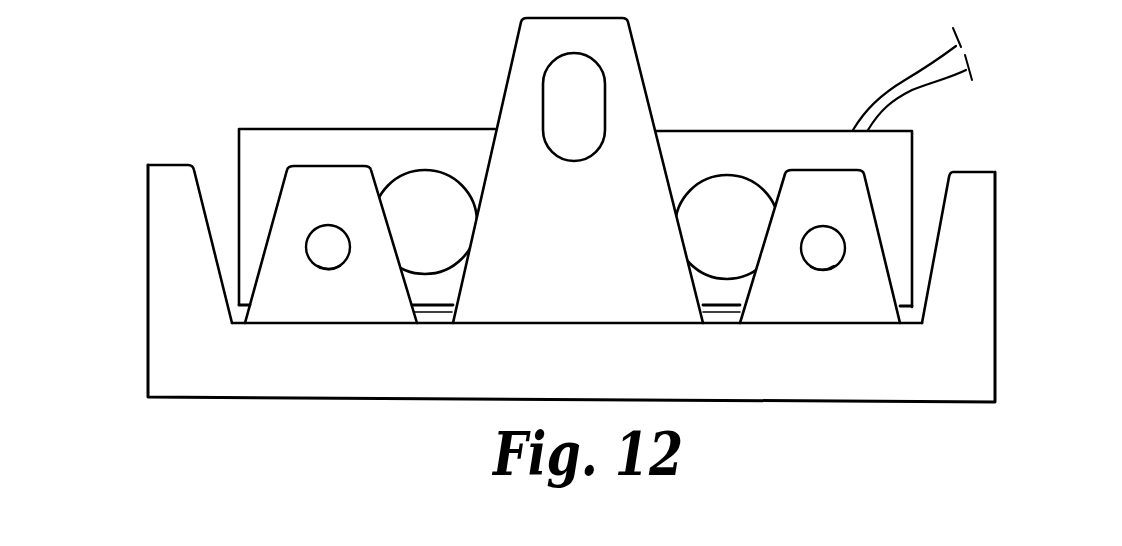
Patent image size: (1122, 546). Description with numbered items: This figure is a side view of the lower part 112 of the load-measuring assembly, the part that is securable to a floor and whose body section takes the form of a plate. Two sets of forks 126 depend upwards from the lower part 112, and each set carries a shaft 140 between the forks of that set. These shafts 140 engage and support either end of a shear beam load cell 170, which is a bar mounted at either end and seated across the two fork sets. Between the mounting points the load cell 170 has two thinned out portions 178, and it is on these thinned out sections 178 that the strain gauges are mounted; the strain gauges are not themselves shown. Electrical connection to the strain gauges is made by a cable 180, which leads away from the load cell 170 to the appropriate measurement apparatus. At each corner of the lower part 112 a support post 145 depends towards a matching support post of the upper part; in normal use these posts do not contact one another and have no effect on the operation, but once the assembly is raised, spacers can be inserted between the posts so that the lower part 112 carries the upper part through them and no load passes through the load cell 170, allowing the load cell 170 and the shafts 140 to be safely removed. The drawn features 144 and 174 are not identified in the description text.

The lower part 112 is at (635, 283).
The forks 126 is at (572, 202).
The shaft 140 is at (609, 333).
The bore edge 144 is at (576, 354).
The support posts 145 is at (612, 204).
The shear beam load cell 170 is at (624, 170).
The slot 174 is at (563, 136).
The thinned out portions 178 is at (576, 172).
The cable 180 is at (967, 79).